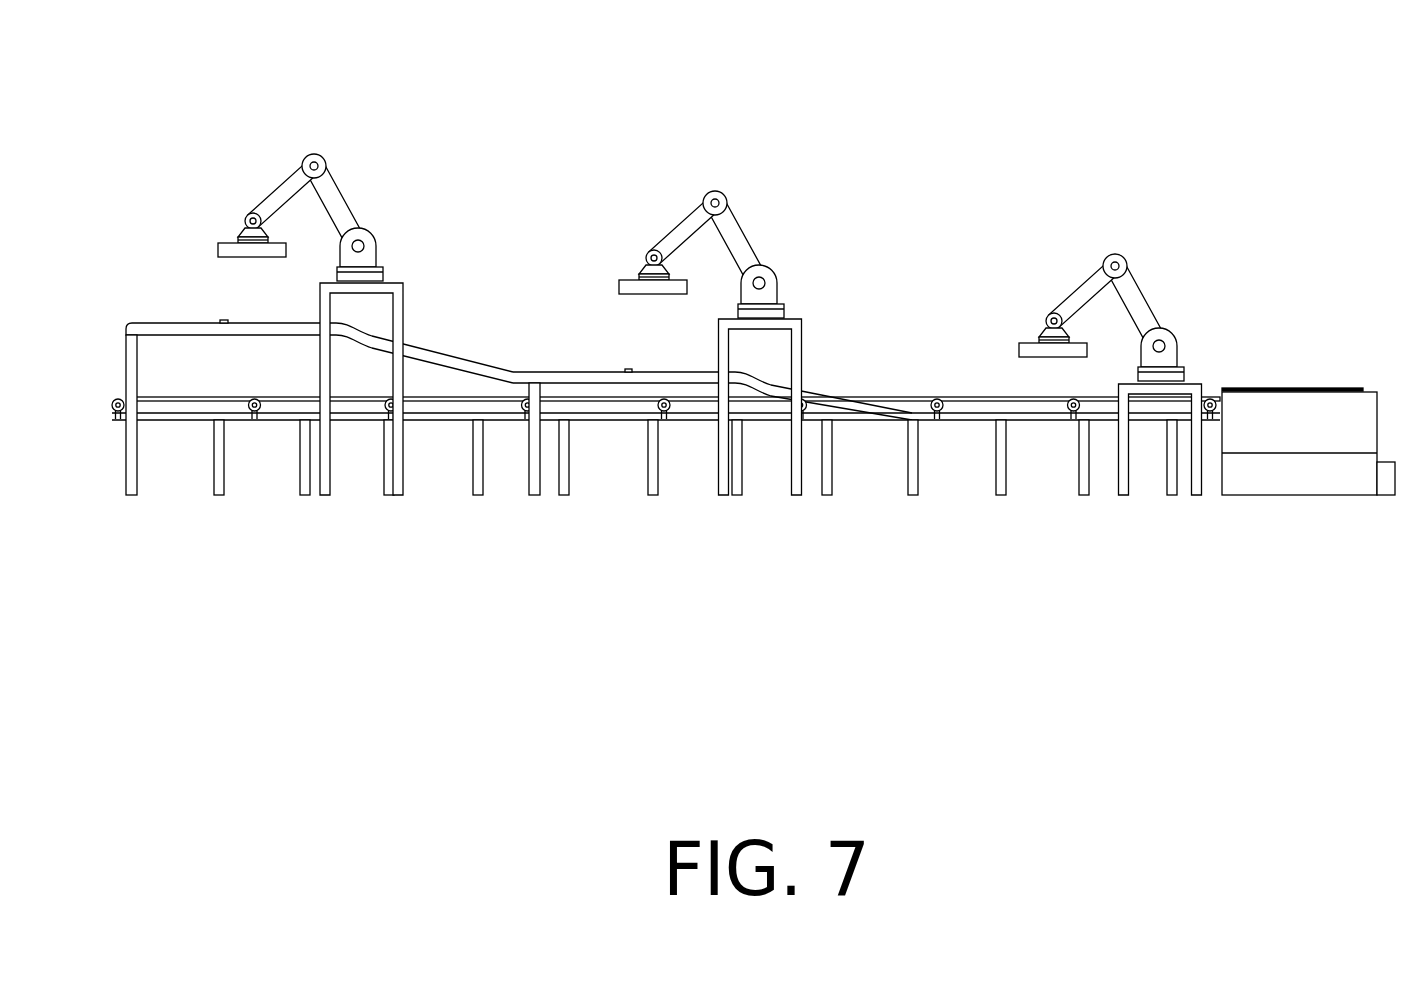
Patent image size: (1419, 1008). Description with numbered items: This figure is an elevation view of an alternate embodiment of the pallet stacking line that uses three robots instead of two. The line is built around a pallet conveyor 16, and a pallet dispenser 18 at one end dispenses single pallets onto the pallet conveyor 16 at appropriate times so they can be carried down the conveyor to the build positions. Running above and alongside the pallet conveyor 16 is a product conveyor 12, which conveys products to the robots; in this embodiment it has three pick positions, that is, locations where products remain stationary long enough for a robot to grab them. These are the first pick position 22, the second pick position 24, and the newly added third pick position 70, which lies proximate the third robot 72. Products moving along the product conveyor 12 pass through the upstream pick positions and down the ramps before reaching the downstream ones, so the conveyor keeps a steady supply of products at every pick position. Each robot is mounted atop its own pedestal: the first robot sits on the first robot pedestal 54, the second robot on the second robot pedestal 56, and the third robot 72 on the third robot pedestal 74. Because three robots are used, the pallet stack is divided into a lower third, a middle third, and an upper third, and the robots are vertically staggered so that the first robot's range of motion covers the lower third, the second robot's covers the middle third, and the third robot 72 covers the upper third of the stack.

The product conveyor 12 is at (191, 323).
The pallet conveyor 16 is at (208, 400).
The pallet dispenser 18 is at (1287, 437).
The first pick position 22 is at (1052, 418).
The second pick position 24 is at (680, 372).
The first robot pedestal 54 is at (1124, 445).
The second robot pedestal 56 is at (797, 357).
The third pick position 70 is at (262, 323).
The third robot 72 is at (338, 205).
The third robot pedestal 74 is at (327, 413).